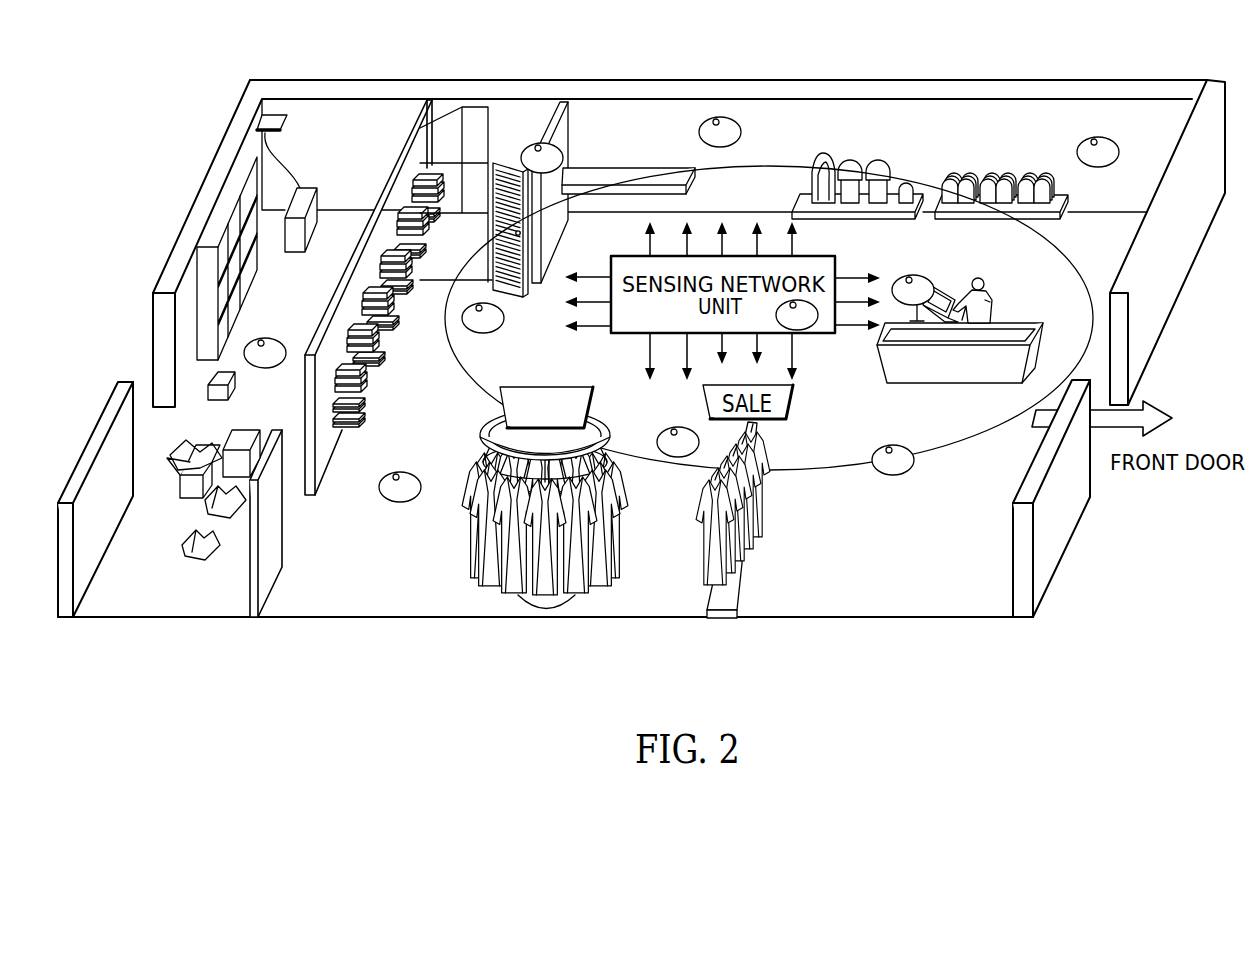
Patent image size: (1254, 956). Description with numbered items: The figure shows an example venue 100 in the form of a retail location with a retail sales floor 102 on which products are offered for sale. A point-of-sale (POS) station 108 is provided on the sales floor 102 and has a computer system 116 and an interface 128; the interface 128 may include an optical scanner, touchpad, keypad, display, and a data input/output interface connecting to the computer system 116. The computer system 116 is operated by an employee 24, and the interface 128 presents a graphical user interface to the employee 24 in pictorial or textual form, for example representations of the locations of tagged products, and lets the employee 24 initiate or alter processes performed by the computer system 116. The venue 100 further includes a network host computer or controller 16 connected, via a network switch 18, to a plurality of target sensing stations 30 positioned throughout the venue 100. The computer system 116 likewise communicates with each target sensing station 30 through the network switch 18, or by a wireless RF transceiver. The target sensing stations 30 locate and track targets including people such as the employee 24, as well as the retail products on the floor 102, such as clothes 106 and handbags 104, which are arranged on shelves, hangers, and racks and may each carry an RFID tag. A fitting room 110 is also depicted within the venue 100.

The venue 100 is at (188, 71).
The retail sales floor 102 is at (935, 616).
The handbags 104 is at (928, 152).
The clothes 106 is at (457, 570).
The point-of-sale (POS) station 108 is at (998, 313).
The fitting room 110 is at (514, 112).
The computer system 116 is at (937, 285).
The interface 128 is at (906, 276).
The network host computer or controller 16 is at (317, 189).
The network switch 18 is at (288, 127).
The employee 24 is at (978, 278).
The target sensing stations 30 is at (681, 334).